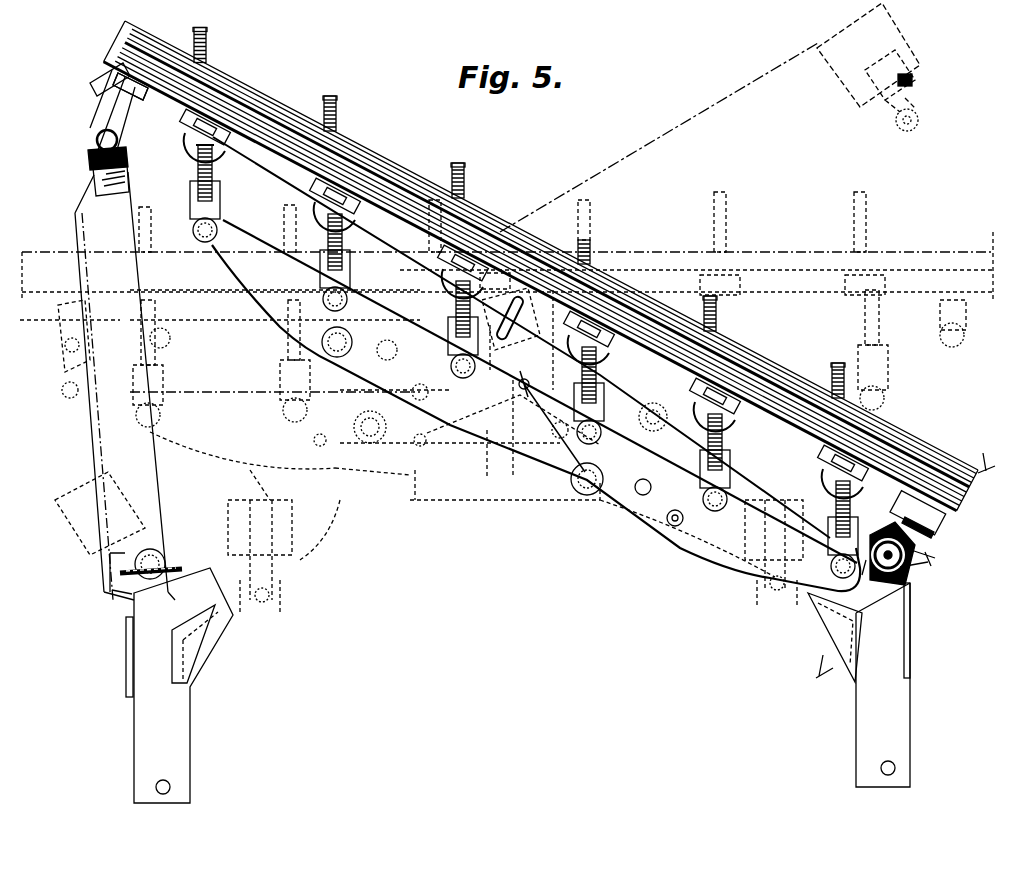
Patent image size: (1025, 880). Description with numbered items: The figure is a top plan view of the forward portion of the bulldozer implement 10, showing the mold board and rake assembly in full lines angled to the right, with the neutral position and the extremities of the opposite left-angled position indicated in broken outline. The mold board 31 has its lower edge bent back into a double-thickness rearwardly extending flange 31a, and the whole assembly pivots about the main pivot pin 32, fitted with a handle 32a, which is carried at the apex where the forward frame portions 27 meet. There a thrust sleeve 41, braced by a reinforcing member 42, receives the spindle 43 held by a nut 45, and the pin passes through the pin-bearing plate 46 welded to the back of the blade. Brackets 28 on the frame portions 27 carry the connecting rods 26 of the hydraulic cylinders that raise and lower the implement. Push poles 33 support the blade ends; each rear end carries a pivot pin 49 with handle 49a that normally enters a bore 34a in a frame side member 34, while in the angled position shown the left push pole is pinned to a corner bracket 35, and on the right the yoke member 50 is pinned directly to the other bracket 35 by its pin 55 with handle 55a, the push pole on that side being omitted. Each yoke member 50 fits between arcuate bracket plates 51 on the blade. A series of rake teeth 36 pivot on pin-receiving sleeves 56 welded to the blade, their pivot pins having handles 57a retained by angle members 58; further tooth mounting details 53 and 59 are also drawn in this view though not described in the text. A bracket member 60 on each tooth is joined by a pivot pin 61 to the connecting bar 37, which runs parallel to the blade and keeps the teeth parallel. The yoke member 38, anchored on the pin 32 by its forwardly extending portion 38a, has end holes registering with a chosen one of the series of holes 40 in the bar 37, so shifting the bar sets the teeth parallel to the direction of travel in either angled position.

The bracket 10 is at (919, 573).
The connecting rods 26 is at (518, 608).
The forward portions of the frame 27 is at (356, 540).
The brackets 28 is at (245, 520).
The mold board 31 is at (394, 163).
The rearwardly extending flange 31a is at (102, 84).
The main pivot pin 32 is at (493, 310).
The handle 32a is at (499, 318).
The push poles 33 is at (100, 424).
The frame side members 34 is at (178, 706).
The bores 34a is at (170, 785).
The bracket 35 is at (135, 598).
The rake teeth 36 is at (573, 202).
The connecting bar 37 is at (255, 345).
The yoke member 38 is at (413, 348).
The forwardly extending portion of the yoke member 38a is at (518, 397).
The holes 40 is at (677, 510).
The thrust sleeve 41 is at (487, 500).
The reinforcing member 42 is at (452, 500).
The spindle 43 is at (498, 523).
The nut 45 is at (515, 528).
The pin-bearing plate 46 is at (531, 388).
The pivot pin 49 is at (120, 572).
The handle 49a is at (163, 565).
The yoke member 50 is at (104, 130).
The bracket plates 51 is at (550, 305).
The nut 53 is at (248, 187).
The pin 55 is at (88, 152).
The handle 55a is at (92, 170).
The pin-receiving sleeve 56 is at (612, 342).
The handle 57a is at (462, 283).
The angle member 58 is at (233, 103).
The threaded stem 59 is at (306, 218).
The bracket member 60 is at (463, 327).
The pivot pins 61 is at (473, 355).